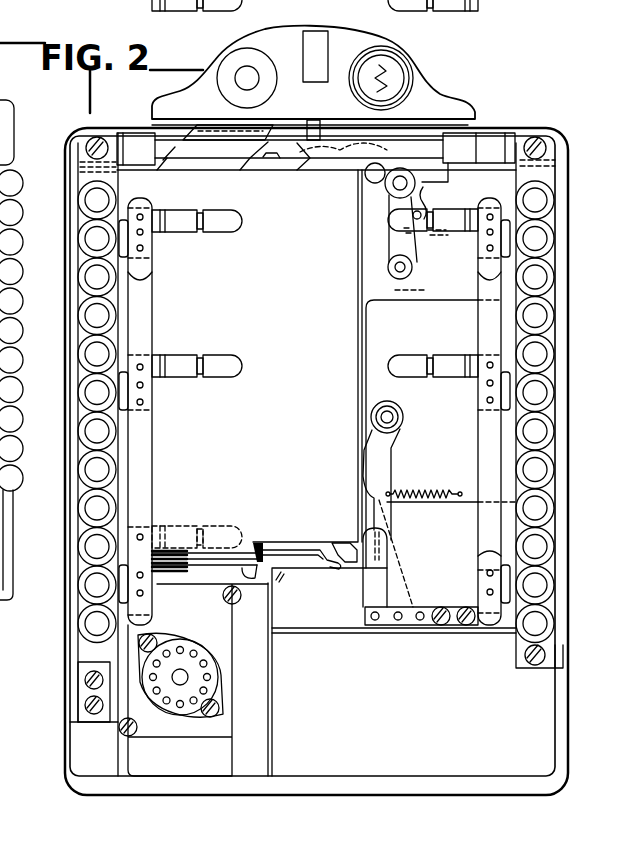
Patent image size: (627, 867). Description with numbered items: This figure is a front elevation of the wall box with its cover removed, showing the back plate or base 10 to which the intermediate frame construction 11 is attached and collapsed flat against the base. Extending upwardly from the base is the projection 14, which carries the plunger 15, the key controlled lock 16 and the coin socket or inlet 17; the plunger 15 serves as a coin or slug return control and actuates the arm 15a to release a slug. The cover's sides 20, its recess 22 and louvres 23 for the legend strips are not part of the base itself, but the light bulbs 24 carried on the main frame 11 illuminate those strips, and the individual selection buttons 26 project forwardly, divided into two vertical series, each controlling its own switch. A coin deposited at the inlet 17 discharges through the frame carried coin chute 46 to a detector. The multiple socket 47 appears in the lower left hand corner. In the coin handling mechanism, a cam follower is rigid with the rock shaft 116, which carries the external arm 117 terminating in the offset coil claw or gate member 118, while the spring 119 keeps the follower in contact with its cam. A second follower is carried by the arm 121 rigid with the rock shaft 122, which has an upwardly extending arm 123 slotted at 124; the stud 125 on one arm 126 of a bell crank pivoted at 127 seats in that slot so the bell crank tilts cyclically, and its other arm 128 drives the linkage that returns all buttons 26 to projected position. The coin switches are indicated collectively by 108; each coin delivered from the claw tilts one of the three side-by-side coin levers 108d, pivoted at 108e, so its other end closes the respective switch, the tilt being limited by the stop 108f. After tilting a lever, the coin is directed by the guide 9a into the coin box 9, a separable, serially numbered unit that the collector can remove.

The coin box 9 is at (523, 732).
The guide 9a is at (323, 618).
The back plate or base 10 is at (72, 573).
The intermediate frame construction 11 is at (80, 745).
The projection 14 is at (430, 97).
The plunger 15 is at (313, 50).
The arm 15a is at (315, 158).
The key controlled lock 16 is at (395, 77).
The coin socket or inlet 17 is at (228, 65).
The sides 20 is at (14, 520).
The recess 22 is at (2, 146).
The louvres 23 is at (5, 263).
The light bulbs 24 is at (231, 232).
The selection buttons 26 is at (92, 282).
The coin chute 46 is at (227, 160).
The multiple socket 47 is at (190, 645).
The coin switches 108 is at (210, 560).
The tiltable coin levers 108d is at (305, 543).
The pivot 108e is at (265, 547).
The stop 108f is at (295, 567).
The rock shaft 116 is at (395, 417).
The external arm 117 is at (388, 466).
The coil claw or gate member 118 is at (353, 567).
The spring 119 is at (423, 490).
The arm 121 is at (401, 290).
The rock shaft 122 is at (390, 270).
The upwardly extending arm 123 is at (415, 240).
The slot 124 is at (405, 233).
The stud 125 is at (440, 230).
The bell crank arm 126 is at (420, 204).
The bell crank pivot 127 is at (391, 186).
The other bell crank arm 128 is at (430, 175).